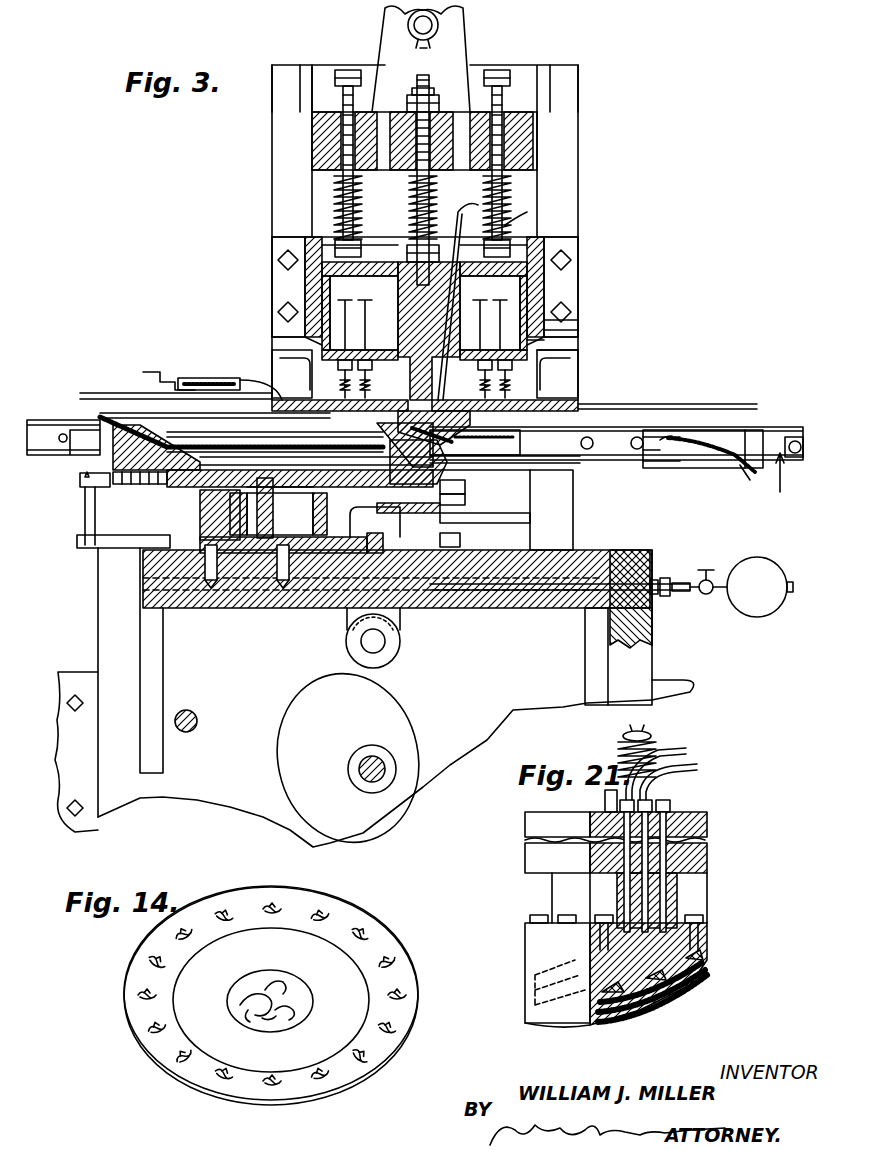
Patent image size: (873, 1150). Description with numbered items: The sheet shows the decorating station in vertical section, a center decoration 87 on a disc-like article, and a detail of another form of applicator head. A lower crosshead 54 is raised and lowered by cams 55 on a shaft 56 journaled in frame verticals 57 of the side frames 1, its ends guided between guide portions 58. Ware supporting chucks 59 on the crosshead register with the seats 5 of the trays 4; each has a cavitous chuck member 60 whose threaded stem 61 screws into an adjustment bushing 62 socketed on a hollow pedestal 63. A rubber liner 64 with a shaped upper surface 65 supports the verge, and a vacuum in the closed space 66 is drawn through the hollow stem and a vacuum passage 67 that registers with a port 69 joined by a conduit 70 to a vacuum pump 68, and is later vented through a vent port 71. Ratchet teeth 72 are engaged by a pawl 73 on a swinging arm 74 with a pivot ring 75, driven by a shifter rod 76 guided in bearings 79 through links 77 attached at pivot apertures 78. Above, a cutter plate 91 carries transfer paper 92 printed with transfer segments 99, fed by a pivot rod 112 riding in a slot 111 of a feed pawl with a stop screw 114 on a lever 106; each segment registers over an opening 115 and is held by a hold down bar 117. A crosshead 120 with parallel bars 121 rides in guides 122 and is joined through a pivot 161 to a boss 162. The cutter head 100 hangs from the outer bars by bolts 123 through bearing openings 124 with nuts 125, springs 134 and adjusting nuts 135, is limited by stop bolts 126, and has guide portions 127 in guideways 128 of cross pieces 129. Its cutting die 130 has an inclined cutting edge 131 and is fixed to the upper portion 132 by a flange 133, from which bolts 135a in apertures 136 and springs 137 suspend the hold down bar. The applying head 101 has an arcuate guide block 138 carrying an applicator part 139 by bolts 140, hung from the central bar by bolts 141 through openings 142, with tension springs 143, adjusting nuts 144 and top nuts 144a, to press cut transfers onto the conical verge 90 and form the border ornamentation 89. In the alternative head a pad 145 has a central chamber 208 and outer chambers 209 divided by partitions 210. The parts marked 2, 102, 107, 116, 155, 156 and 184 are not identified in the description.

In FIG. 3, the side frame 1 is at (58, 768).
In FIG. 3, the direction of movement arrow 2 is at (781, 482).
In FIG. 3, the tray 4 is at (566, 467).
In FIG. 3, the seat 5 is at (100, 431).
In FIG. 3, the lower crosshead 54 is at (563, 610).
In FIG. 3, the cam 55 is at (416, 712).
In FIG. 3, the shaft 56 is at (397, 769).
In FIG. 3, the frame vertical 57 is at (320, 64).
In FIG. 3, the guide portion 58 is at (116, 656).
In FIG. 3, the ware supporting chuck 59 is at (163, 495).
In FIG. 3, the cavitous chuck member 60 is at (100, 482).
In FIG. 3, the threaded depending stem 61 is at (313, 516).
In FIG. 3, the flanged adjustment bushing 62 is at (206, 520).
In FIG. 3, the hollow supporting pedestal 63 is at (200, 527).
In FIG. 3, the rubber insert or liner 64 is at (460, 490).
In FIG. 3, the upper surface of liner 65 is at (130, 420).
In FIG. 3, the closed space 66 is at (252, 436).
In FIG. 3, the vacuum passage 67 is at (284, 608).
In FIG. 3, the vacuum pump 68 is at (773, 547).
In FIG. 3, the port 69 is at (668, 537).
In FIG. 3, the conduit 70 is at (709, 596).
In FIG. 3, the vent port 71 is at (655, 606).
In FIG. 3, the ratchet teeth 72 is at (88, 511).
In FIG. 3, the spring pressed pawl 73 is at (529, 496).
In FIG. 3, the swinging arm 74 is at (472, 513).
In FIG. 3, the pivot ring 75 is at (208, 608).
In FIG. 3, the shifter rod 76 is at (462, 540).
In FIG. 3, the link 77 is at (401, 641).
In FIG. 3, the pivot aperture 78 is at (402, 516).
In FIG. 3, the bearing 79 is at (528, 522).
In FIG. 14, the center decoration 87 is at (291, 992).
In FIG. 14, the verge ornamentation 89 is at (396, 962).
In FIG. 3, the conical verge 90 is at (118, 390).
In FIG. 3, the cutter plate 91 is at (586, 426).
In FIG. 3, the transfer paper 92 is at (690, 404).
In FIG. 3, the transfer segment 99 is at (510, 447).
In FIG. 3, the cutter head 100 is at (560, 350).
In FIG. 3, the applying plunger head 101 is at (560, 290).
In FIG. 3, the mold plate 102 is at (265, 378).
In FIG. 3, the lever 106 is at (264, 441).
In FIG. 3, the hole 107 is at (198, 721).
In FIG. 3, the elongated slot 111 is at (218, 378).
In FIG. 3, the pivot rod 112 is at (262, 420).
In FIG. 3, the stop screw 114 is at (174, 375).
In FIG. 3, the slot or opening 115 is at (496, 458).
In FIG. 3, the slide housing 116 is at (521, 440).
In FIG. 3, the hold down bar 117 is at (324, 450).
In FIG. 3, the crosshead 120 is at (545, 152).
In FIG. 3, the parallel bar 121 is at (405, 110).
In FIG. 3, the guide 122 is at (312, 90).
In FIG. 3, the upright bolt 123 is at (351, 71).
In FIG. 3, the bearing opening 124 is at (312, 126).
In FIG. 3, the nut 125 is at (338, 88).
In FIG. 3, the adjustable stop 126 is at (311, 375).
In FIG. 3, the guide portion 127 is at (288, 286).
In FIG. 3, the guideway 128 is at (300, 250).
In FIG. 3, the cross piece 129 is at (305, 236).
In FIG. 3, the cutting die part 130 is at (546, 342).
In FIG. 3, the cutting edge 131 is at (362, 438).
In FIG. 3, the upper portion of cutter head 132 is at (562, 322).
In FIG. 3, the flange 133 is at (560, 332).
In FIG. 3, the compression spring 134 is at (340, 205).
In FIG. 3, the adjusting nut 135 is at (362, 246).
In FIG. 3, the upright bolt 135a is at (378, 322).
In FIG. 3, the aperture 136 is at (305, 340).
In FIG. 3, the compression spring 137 is at (546, 400).
In FIG. 3, the upper guide portion 138 is at (460, 240).
In FIG. 21, the upper guide portion 138 is at (718, 861).
In FIG. 3, the applicator part 139 is at (280, 498).
In FIG. 21, the applicator part 139 is at (713, 949).
In FIG. 21, the bolt 140 is at (601, 917).
In FIG. 3, the upright bolt 141 is at (426, 90).
In FIG. 21, the upright bolt 141 is at (646, 735).
In FIG. 3, the opening 142 is at (490, 212).
In FIG. 3, the tension spring 143 is at (360, 216).
In FIG. 21, the tension spring 143 is at (616, 756).
In FIG. 3, the adjusting nut 144 is at (405, 258).
In FIG. 21, the adjusting nut 144 is at (613, 800).
In FIG. 3, the nut 144a is at (430, 98).
In FIG. 21, the pad 145 is at (702, 982).
In FIG. 3, the supply tube 155 is at (510, 216).
In FIG. 21, the supply tube 155 is at (691, 752).
In FIG. 3, the head plate 156 is at (452, 280).
In FIG. 21, the head plate 156 is at (708, 831).
In FIG. 3, the pivotal connection 161 is at (438, 25).
In FIG. 3, the upstanding boss 162 is at (384, 32).
In FIG. 3, the rail end 184 is at (42, 425).
In FIG. 21, the central chamber 208 is at (646, 1024).
In FIG. 21, the outer chamber 209 is at (702, 966).
In FIG. 21, the partition 210 is at (702, 1000).